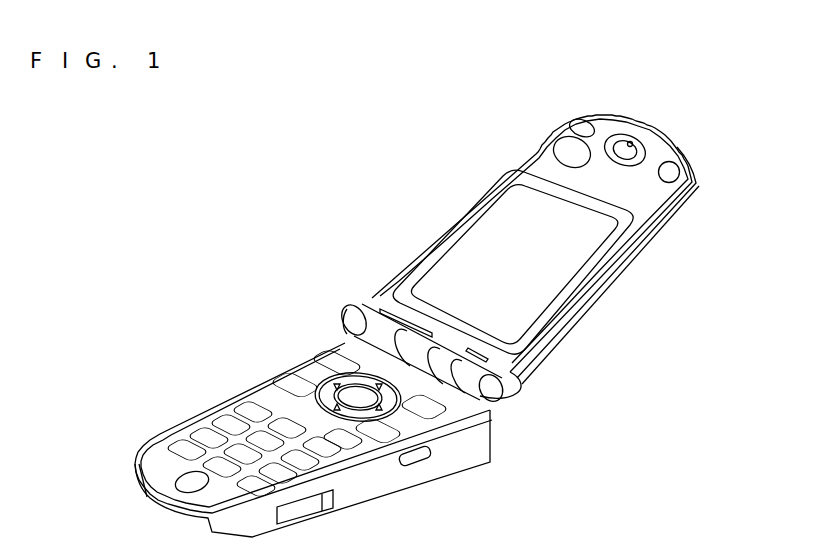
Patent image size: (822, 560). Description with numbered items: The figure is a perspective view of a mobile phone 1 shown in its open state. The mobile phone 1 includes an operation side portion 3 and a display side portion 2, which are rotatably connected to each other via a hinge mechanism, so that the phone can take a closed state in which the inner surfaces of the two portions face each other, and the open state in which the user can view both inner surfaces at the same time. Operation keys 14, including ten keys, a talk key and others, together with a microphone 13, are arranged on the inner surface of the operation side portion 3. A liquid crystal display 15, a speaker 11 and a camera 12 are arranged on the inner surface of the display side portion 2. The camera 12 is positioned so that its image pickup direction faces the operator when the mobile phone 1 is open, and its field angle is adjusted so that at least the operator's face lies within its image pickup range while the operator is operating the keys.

The mobile phone 1 is at (224, 133).
The display side portion 2 is at (610, 267).
The operation side portion 3 is at (458, 440).
The speaker 11 is at (631, 143).
The camera 12 is at (568, 148).
The microphone 13 is at (197, 477).
The operation keys 14 is at (139, 426).
The liquid crystal display (LCD) 15 is at (483, 240).